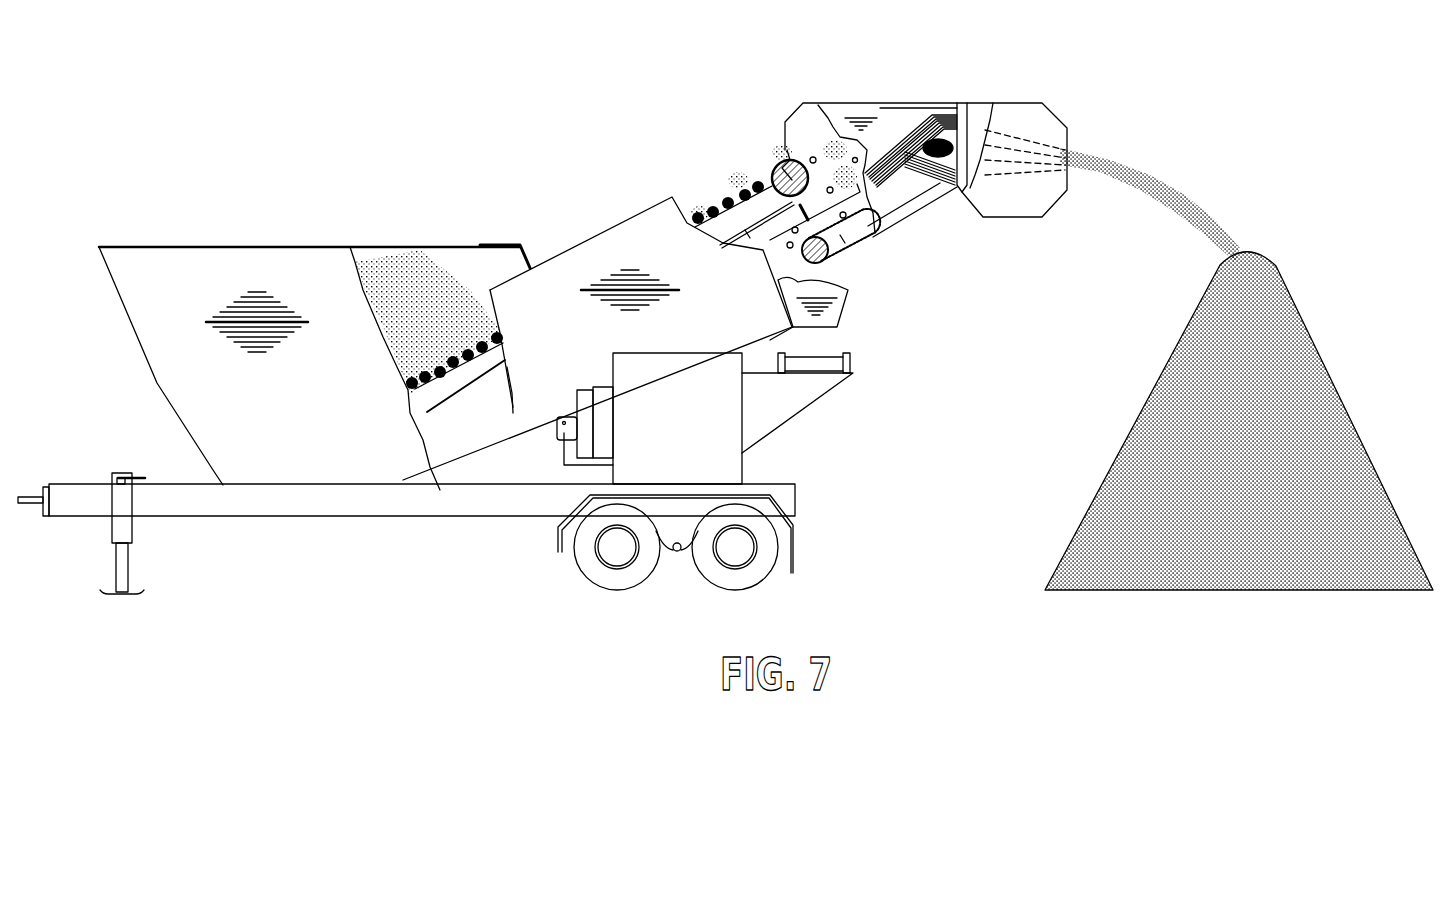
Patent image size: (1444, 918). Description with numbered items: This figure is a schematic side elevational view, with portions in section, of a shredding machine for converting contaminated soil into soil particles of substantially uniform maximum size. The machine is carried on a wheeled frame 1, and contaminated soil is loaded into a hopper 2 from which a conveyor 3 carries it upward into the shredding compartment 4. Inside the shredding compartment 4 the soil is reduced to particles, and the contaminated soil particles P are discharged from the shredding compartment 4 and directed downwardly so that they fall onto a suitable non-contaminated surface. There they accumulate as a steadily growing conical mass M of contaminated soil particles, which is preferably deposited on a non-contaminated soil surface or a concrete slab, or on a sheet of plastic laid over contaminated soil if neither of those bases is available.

The trailer frame 1 is at (485, 518).
The feed hopper 2 is at (256, 246).
The feed conveyor 3 is at (440, 410).
The shredding compartment 4 is at (860, 103).
The soil particles P is at (842, 162).
The conical mass M is at (1148, 392).